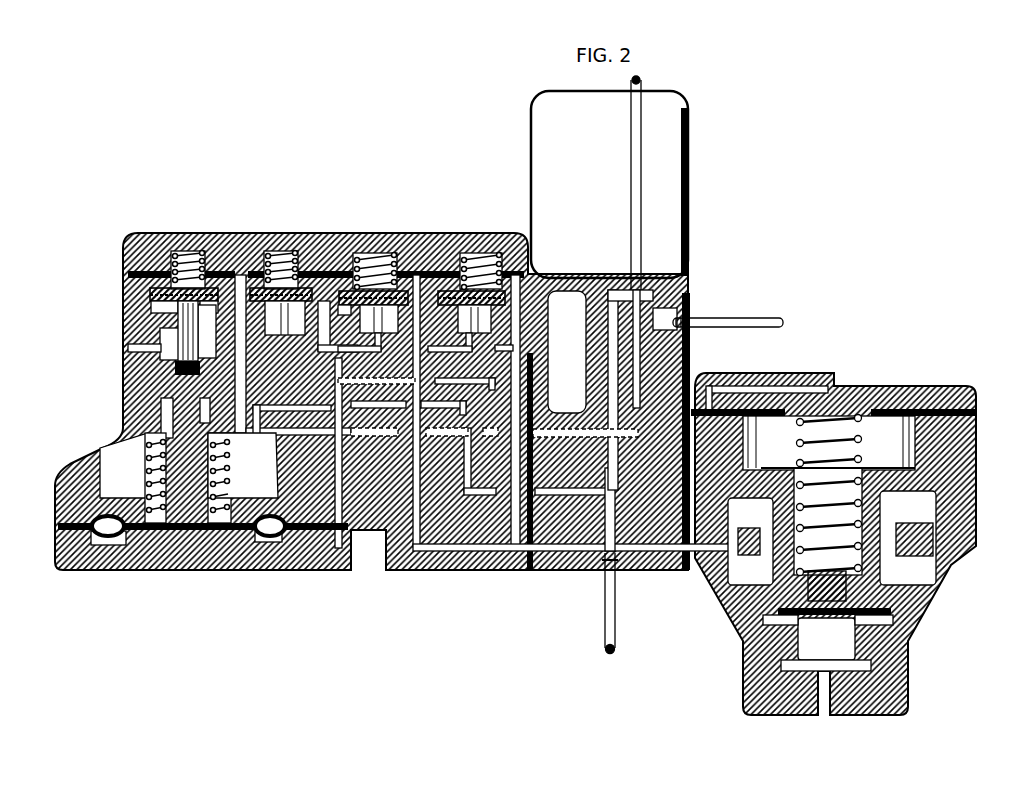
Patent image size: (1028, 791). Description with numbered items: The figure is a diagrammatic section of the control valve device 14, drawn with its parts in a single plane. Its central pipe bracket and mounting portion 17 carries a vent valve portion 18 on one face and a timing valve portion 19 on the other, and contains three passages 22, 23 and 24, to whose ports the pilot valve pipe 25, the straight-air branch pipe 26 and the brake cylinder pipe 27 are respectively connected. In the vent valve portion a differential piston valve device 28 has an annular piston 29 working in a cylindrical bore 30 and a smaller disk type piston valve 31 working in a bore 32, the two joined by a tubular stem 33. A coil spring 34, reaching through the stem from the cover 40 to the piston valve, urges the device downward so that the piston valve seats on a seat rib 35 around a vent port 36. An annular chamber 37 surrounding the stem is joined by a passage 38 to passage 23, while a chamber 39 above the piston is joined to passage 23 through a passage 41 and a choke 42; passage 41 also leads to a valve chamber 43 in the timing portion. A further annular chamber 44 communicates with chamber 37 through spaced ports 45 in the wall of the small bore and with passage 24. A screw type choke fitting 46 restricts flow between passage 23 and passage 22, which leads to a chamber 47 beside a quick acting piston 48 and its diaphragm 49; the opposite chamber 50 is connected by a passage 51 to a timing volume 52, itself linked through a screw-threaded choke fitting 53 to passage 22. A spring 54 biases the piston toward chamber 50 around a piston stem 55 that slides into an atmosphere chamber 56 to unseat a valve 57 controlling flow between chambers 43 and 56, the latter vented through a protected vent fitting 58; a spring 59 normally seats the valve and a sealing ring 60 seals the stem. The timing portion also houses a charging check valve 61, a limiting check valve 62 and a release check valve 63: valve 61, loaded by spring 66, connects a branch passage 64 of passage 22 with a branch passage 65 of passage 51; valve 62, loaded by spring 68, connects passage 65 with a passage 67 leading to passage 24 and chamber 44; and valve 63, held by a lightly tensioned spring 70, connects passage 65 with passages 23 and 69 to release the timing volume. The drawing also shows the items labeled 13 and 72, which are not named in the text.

The cylinder 13 is at (755, 450).
The control valve device 14 is at (683, 147).
The pipe bracket and mounting portion 17 is at (688, 267).
The vent valve portion 18 is at (890, 590).
The timing valve portion 19 is at (127, 386).
The passage 22 is at (677, 376).
The passage 23 is at (633, 332).
The passage 24 is at (611, 555).
The pilot valve pipe 25 is at (630, 190).
The straight-air pipe branch pipe 26 is at (770, 310).
The pipe leading to the brake cylinders 27 is at (597, 641).
The differential piston valve device 28 is at (895, 498).
The annular piston 29 is at (876, 456).
The cylindrical bore 30 is at (872, 440).
The disk type piston valve 31 is at (945, 553).
The bore 32 is at (930, 568).
The tubular stem 33 is at (905, 526).
The coil spring 34 is at (880, 470).
The seat rib 35 is at (898, 615).
The vent port 36 is at (835, 660).
The annular chamber 37 is at (905, 481).
The passage 38 is at (677, 535).
The chamber 39 is at (926, 380).
The cover 40 is at (848, 373).
The passage 41 is at (232, 272).
The choke 42 is at (642, 545).
The valve chamber 43 is at (133, 272).
The annular chamber 44 is at (713, 578).
The spaced ports 45 is at (895, 546).
The screw type choke fitting 46 is at (662, 310).
The chamber 47 is at (185, 480).
The quick acting piston 48 is at (140, 540).
The diaphragm 49 is at (255, 537).
The chamber 50 is at (272, 527).
The passage 51 is at (330, 530).
The timing volume 52 is at (570, 290).
The screw-threaded choke fitting 53 is at (578, 384).
The spring 54 is at (120, 430).
The piston stem 55 is at (130, 458).
The atmosphere chamber 56 is at (172, 306).
The valve 57 is at (150, 289).
The protected vent fitting 58 is at (130, 344).
The spring 59 is at (172, 246).
The sealing ring 60 is at (162, 368).
The timing volume charging check valve 61 is at (296, 292).
The limiting check valve 62 is at (378, 285).
The release check valve 63 is at (462, 292).
The branch passage 64 is at (283, 300).
The branch passage 65 is at (300, 284).
The spring 66 is at (272, 250).
The passage 67 is at (407, 270).
The spring 68 is at (355, 292).
The passage 69 is at (472, 250).
The lightly tensioned spring 70 is at (446, 297).
The spring 72 is at (800, 392).